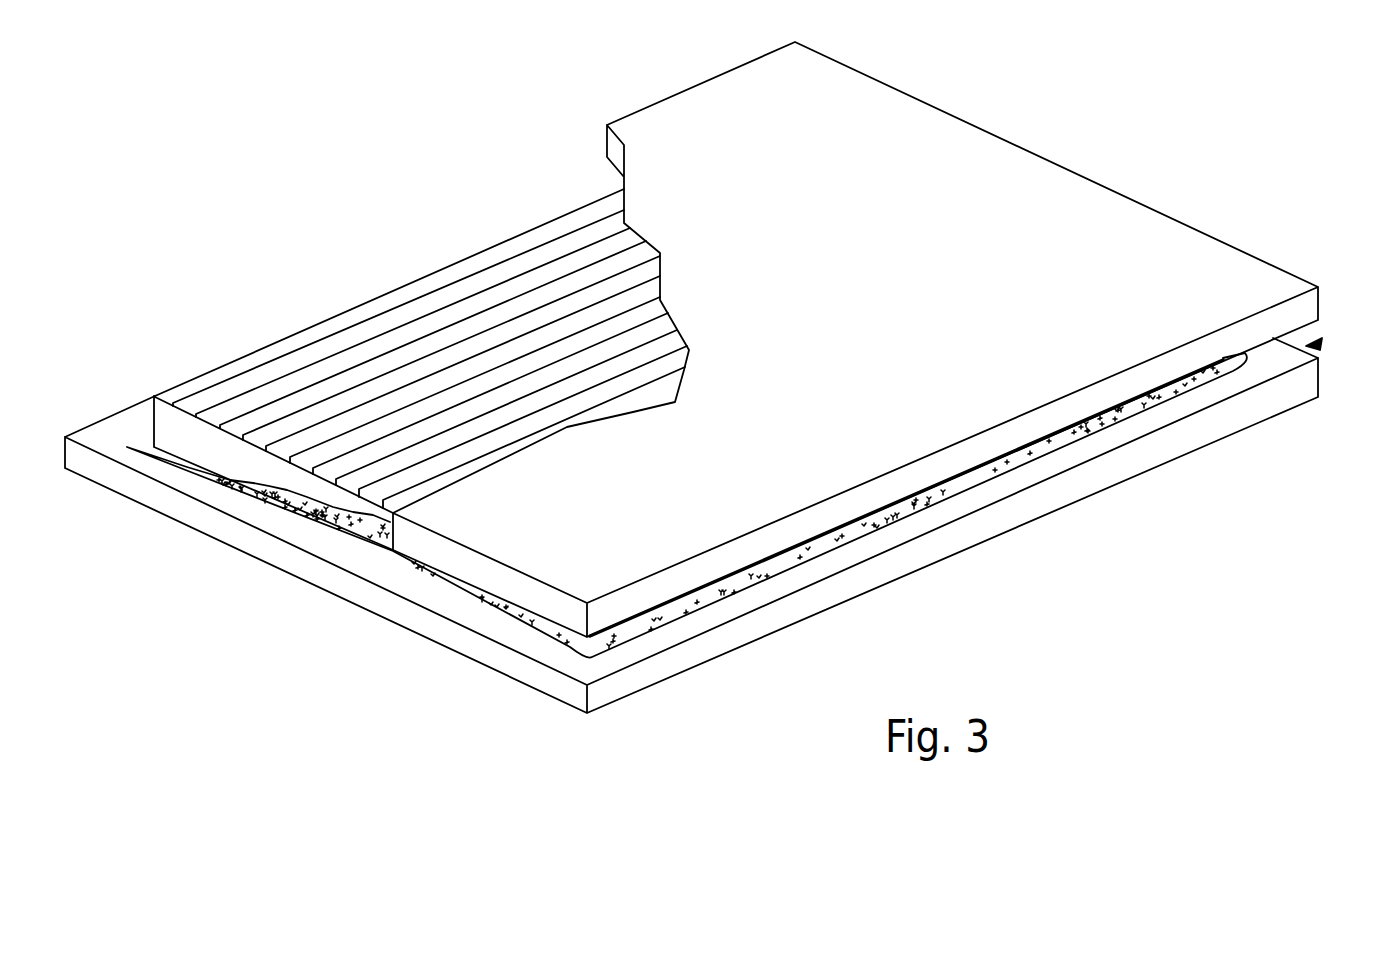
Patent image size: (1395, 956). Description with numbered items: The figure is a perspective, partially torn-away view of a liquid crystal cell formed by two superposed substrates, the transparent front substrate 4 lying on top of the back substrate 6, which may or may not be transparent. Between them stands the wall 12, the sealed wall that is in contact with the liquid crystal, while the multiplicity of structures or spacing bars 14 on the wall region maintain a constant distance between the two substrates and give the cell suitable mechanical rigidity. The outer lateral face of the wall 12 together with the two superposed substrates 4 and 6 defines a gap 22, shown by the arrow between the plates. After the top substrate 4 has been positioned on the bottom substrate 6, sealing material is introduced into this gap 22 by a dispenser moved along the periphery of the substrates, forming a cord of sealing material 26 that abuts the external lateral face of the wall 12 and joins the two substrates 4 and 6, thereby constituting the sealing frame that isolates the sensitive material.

The front substrate 4 is at (1022, 178).
The back substrate 6 is at (1075, 490).
The wall 12 is at (205, 380).
The spacing bars 14 is at (468, 380).
The gap 22 is at (1314, 345).
The cord of sealing material 26 is at (337, 517).